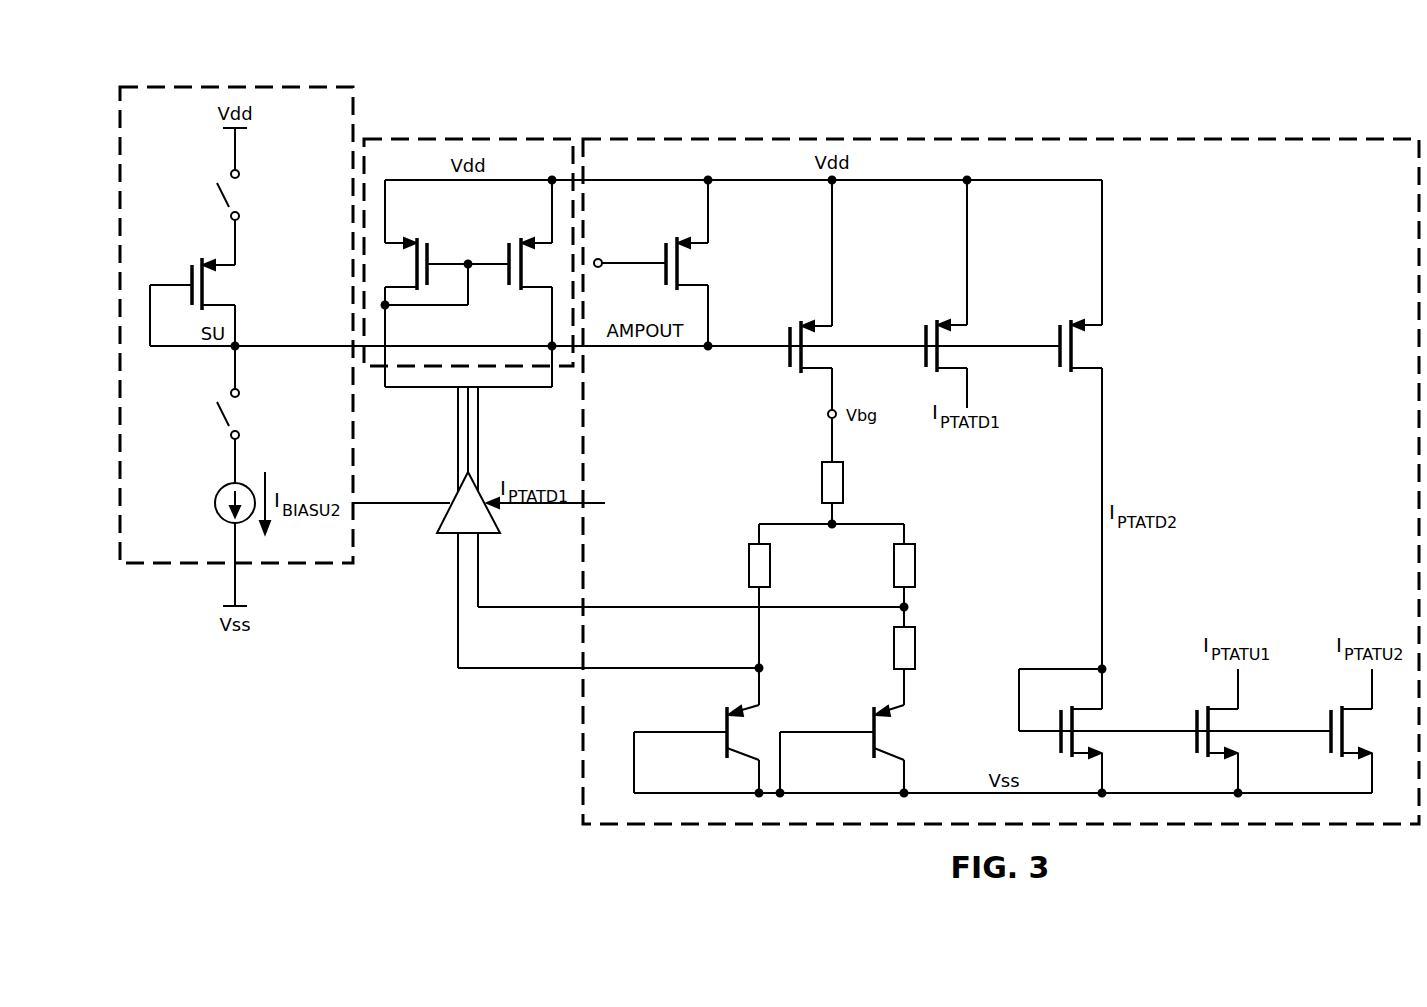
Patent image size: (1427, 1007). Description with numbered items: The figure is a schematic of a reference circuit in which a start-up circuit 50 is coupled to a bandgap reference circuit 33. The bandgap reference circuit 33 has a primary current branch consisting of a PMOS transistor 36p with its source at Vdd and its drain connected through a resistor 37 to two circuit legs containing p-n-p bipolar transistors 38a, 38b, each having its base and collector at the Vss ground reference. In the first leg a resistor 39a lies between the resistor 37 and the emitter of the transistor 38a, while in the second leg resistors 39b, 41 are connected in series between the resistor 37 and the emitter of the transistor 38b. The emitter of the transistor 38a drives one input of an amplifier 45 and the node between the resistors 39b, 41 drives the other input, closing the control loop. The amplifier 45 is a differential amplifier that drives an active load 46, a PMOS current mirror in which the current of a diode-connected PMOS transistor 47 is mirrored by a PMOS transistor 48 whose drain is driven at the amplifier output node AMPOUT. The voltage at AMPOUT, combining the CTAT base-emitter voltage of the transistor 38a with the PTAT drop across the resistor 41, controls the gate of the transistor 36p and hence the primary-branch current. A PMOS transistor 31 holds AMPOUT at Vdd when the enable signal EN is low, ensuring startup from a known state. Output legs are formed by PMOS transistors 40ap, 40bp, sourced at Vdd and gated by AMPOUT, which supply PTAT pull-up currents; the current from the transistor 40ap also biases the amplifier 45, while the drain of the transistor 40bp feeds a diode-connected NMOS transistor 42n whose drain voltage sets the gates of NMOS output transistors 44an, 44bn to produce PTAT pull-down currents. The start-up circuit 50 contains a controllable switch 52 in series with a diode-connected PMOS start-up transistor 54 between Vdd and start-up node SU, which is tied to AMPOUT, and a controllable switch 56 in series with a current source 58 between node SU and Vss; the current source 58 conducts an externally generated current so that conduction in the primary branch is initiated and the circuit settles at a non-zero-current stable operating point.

The start-up circuit 50 is at (198, 84).
The controllable switch 52 is at (222, 201).
The PMOS start-up transistor 54 is at (190, 267).
The controllable switch 56 is at (222, 421).
The current source 58 is at (213, 503).
The active load 46 is at (440, 134).
The diode-connected PMOS transistor 47 is at (430, 253).
The PMOS transistor 48 is at (507, 278).
The amplifier 45 is at (450, 537).
The PMOS transistor 31 is at (662, 273).
The bandgap reference circuit 33 is at (1168, 136).
The PMOS transistor 36p is at (787, 333).
The PMOS transistor 40ap is at (923, 333).
The PMOS transistor 40bp is at (1058, 333).
The resistor 37 is at (843, 482).
The resistor 39a is at (772, 563).
The resistor 39b is at (916, 565).
The resistor 41 is at (916, 648).
The p-n-p bipolar transistor 38a is at (725, 742).
The p-n-p bipolar transistor 38b is at (872, 742).
The diode-connected NMOS transistor 42n is at (1057, 740).
The NMOS output transistor 44an is at (1193, 742).
The NMOS output transistor 44bn is at (1328, 742).